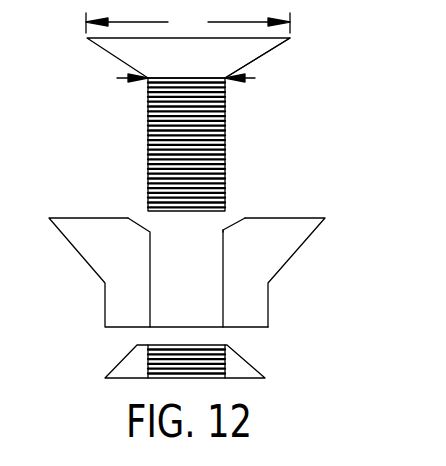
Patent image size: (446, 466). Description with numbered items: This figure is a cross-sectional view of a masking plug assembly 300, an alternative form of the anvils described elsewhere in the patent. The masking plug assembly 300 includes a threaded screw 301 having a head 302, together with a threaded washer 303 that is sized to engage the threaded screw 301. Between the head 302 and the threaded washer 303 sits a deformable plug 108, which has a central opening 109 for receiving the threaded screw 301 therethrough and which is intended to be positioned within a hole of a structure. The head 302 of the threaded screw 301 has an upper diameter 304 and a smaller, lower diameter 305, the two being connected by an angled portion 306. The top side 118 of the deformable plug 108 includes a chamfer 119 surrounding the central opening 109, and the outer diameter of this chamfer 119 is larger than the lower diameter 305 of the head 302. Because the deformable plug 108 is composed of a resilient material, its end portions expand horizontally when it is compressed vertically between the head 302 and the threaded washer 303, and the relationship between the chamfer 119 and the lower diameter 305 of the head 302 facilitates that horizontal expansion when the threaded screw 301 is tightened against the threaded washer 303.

The masking plug assembly 300 is at (353, 27).
The threaded screw 301 is at (148, 130).
The head 302 is at (100, 44).
The threaded washer 303 is at (112, 375).
The upper diameter 304 is at (188, 23).
The lower diameter 305 is at (116, 78).
The angled portion 306 is at (265, 53).
The deformable plug 108 is at (72, 248).
The central opening 109 is at (173, 238).
The top side 118 is at (295, 218).
The chamfer 119 is at (230, 222).